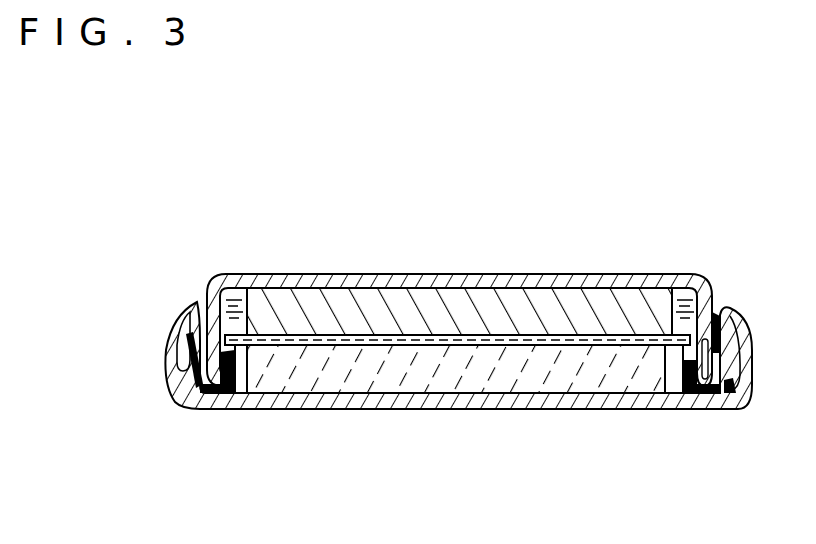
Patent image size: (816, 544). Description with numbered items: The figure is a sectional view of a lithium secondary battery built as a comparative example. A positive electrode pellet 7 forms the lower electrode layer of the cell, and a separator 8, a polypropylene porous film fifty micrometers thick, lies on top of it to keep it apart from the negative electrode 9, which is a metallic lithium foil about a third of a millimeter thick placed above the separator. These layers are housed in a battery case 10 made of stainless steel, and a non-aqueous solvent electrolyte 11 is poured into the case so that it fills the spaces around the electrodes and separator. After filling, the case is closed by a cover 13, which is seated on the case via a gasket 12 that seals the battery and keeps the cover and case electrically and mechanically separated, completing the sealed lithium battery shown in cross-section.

The positive electrode pellet 7 is at (612, 378).
The separator 8 is at (649, 333).
The negative electrode 9 is at (562, 307).
The battery case 10 is at (275, 409).
The non-aqueous solvent electrolyte 11 is at (214, 274).
The gasket 12 is at (173, 397).
The cover 13 is at (332, 274).